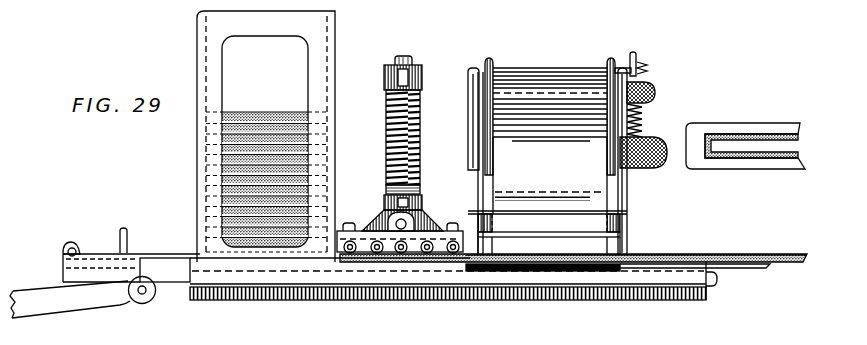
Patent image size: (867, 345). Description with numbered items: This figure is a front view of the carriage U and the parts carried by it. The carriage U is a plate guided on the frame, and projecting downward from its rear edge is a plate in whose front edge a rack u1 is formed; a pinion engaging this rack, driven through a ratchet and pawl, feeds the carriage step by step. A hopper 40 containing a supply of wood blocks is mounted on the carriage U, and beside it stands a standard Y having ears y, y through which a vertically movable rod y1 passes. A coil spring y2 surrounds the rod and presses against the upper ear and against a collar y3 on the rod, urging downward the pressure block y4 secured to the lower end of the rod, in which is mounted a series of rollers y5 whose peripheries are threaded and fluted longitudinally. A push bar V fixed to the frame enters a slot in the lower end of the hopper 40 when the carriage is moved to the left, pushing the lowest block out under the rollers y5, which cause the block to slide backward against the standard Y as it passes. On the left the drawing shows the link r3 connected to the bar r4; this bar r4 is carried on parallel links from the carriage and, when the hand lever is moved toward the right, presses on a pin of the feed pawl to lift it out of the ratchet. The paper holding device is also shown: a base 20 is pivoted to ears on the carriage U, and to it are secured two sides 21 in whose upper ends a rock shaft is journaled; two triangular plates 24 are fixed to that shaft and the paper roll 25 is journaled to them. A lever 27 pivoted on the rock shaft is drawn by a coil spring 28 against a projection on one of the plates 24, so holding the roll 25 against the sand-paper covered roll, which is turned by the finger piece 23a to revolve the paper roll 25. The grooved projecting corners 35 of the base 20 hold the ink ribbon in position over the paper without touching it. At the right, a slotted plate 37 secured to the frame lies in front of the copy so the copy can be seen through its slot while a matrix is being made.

The hopper 40 is at (266, 136).
The arm v is at (101, 262).
The push bar V is at (165, 253).
The link r3 is at (70, 299).
The bar r4 is at (165, 292).
The carriage U is at (453, 279).
The rack u1 is at (573, 291).
The rod y1 is at (405, 57).
The ears y is at (384, 205).
The coil spring y2 is at (390, 110).
The collar y3 is at (388, 189).
The standard Y is at (422, 171).
The pressure block y4 is at (437, 241).
The rollers y5 is at (380, 252).
The triangular plates 24 is at (627, 121).
The paper roll 25 is at (542, 85).
The sides 21 is at (622, 207).
The grooved projecting corners 35 is at (496, 231).
The base 20 is at (620, 236).
The lever 27 is at (640, 55).
The coil spring 28 is at (644, 113).
The finger piece 23a is at (647, 168).
The slotted plate 37 is at (745, 138).